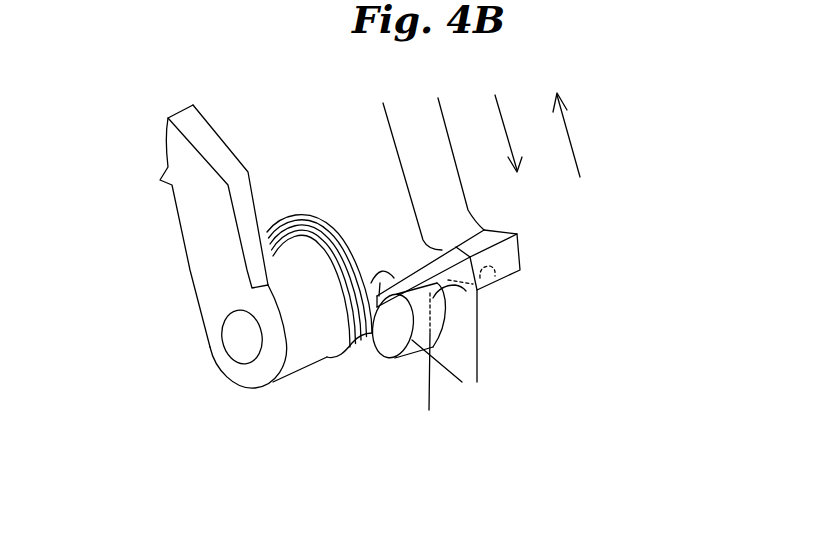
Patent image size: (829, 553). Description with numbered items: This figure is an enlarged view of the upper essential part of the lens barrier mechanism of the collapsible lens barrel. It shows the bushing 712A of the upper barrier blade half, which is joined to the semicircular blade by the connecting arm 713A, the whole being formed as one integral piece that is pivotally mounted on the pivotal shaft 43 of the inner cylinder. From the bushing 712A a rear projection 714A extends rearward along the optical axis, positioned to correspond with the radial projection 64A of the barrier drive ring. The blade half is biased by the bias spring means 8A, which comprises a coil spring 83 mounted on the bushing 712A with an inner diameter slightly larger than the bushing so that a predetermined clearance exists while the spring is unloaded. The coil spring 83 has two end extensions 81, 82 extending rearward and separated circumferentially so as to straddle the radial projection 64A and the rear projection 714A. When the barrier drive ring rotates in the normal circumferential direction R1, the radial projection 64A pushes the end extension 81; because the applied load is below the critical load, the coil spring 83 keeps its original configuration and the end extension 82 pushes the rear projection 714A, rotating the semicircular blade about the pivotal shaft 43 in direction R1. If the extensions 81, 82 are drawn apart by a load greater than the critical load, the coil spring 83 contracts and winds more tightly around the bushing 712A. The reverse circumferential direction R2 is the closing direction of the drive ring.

The connecting arm 713A is at (198, 218).
The bushing 712A is at (297, 361).
The pivotal shaft 43 is at (241, 343).
The rear projection 714A is at (383, 277).
The radial projection 64A is at (522, 245).
The end extension 82 is at (483, 284).
The end extension 81 is at (480, 320).
The coil spring 83 is at (375, 342).
The bias spring means 8A is at (550, 398).
The normal circumferential direction R1 is at (496, 133).
The reverse circumferential direction R2 is at (577, 135).